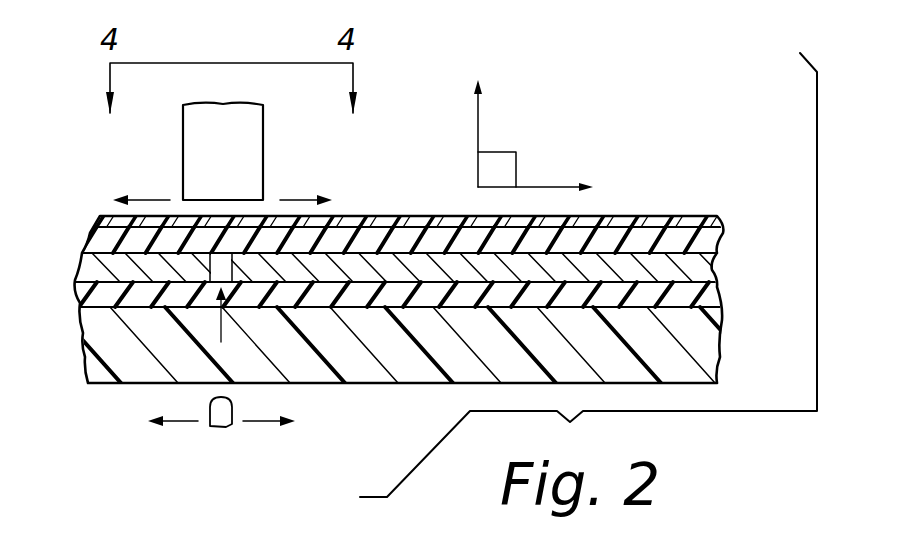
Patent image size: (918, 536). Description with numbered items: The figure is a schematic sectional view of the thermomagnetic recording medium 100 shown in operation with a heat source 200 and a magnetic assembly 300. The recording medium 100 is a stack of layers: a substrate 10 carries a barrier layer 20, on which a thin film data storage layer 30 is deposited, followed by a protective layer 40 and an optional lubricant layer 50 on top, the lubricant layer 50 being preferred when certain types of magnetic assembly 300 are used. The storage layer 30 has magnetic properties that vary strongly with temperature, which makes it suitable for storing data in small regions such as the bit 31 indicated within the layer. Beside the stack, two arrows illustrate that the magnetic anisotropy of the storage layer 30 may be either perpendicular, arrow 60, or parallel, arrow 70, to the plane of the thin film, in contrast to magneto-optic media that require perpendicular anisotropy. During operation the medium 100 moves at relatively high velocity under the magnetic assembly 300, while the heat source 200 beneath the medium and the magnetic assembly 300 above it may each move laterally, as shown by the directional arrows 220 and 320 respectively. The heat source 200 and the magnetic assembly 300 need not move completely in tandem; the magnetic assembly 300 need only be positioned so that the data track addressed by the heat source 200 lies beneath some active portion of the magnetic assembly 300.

The substrate 10 is at (410, 345).
The barrier layer 20 is at (411, 294).
The thin film data storage layer 30 is at (399, 267).
The bit 31 is at (210, 263).
The protective layer 40 is at (407, 240).
The lubricant layer 50 is at (421, 221).
The perpendicular anisotropy arrow 60 is at (478, 124).
The parallel anisotropy arrow 70 is at (568, 191).
The thermomagnetic recording medium 100 is at (640, 167).
The heat source 200 is at (227, 426).
The directional arrow 220 is at (192, 422).
The magnetic assembly 300 is at (253, 148).
The directional arrow 320 is at (157, 197).